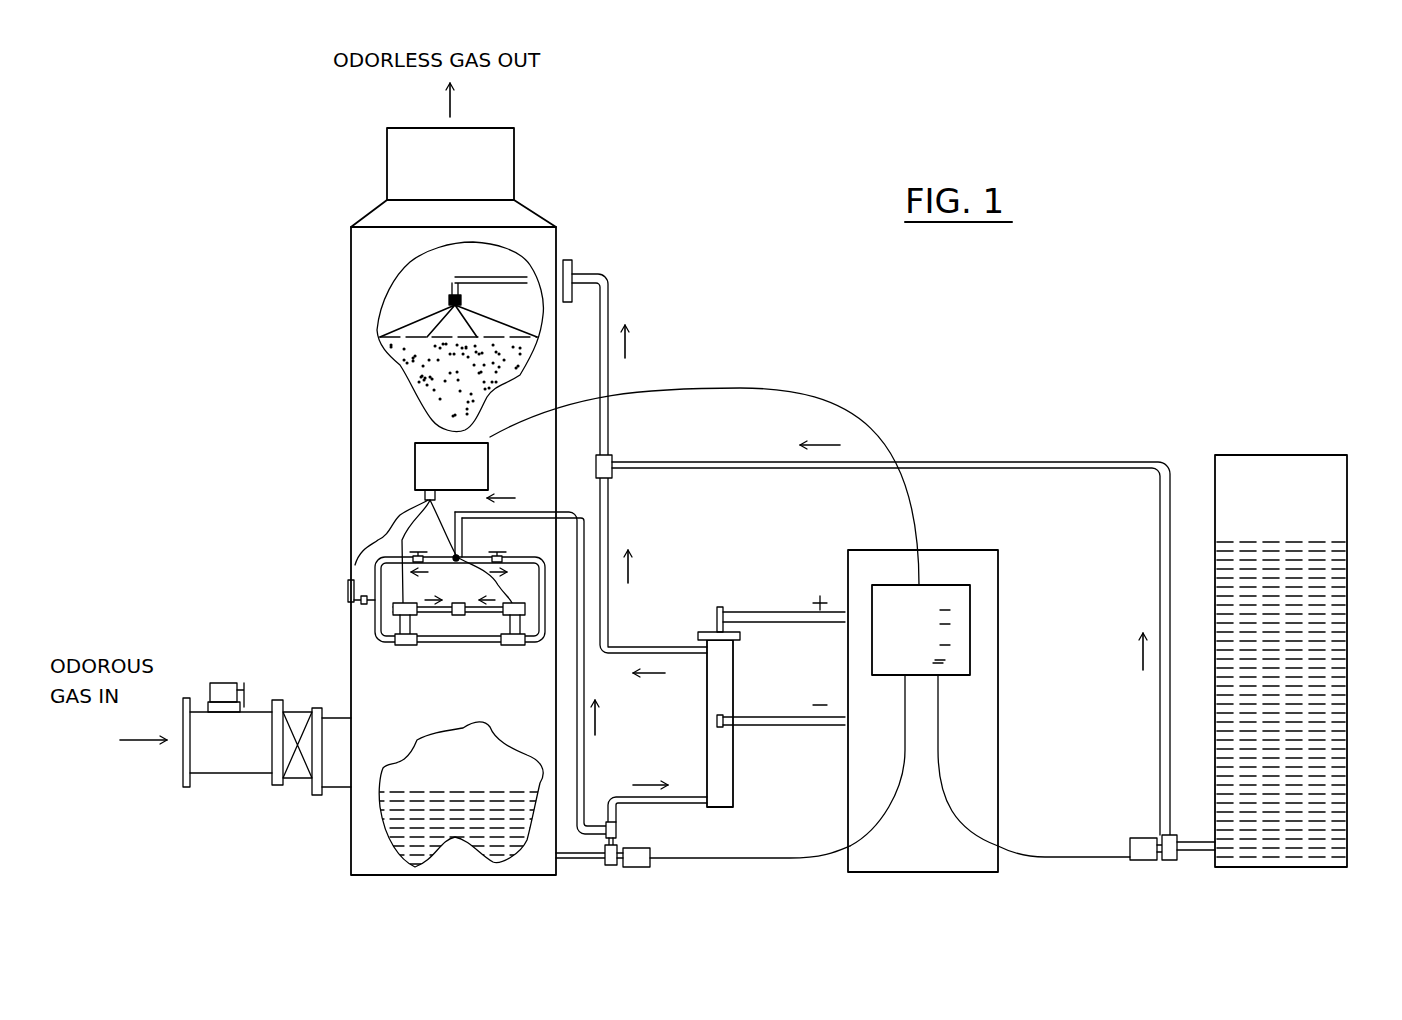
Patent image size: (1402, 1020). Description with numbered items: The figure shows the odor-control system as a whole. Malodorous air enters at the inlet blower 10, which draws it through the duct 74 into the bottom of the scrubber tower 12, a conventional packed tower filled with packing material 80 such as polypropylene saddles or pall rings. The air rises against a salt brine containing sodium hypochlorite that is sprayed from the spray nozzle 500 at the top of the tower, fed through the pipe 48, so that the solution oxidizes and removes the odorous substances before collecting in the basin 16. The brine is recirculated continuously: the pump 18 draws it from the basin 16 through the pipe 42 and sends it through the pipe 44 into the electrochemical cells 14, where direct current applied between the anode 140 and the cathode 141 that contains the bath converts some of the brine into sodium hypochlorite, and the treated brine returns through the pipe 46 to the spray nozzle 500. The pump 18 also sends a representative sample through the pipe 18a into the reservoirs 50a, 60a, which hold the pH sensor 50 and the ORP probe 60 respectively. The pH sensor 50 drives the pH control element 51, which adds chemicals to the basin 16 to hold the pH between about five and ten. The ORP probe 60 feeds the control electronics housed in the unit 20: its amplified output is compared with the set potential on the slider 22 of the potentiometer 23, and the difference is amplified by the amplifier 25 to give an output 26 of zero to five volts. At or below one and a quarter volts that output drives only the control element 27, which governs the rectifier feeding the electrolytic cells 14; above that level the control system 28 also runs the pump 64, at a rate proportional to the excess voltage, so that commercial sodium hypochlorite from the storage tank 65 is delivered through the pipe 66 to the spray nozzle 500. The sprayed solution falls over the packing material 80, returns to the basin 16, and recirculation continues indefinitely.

The blower 10 is at (237, 755).
The scrubber tower 12 is at (548, 240).
The electrochemical cells 14 is at (722, 807).
The basin 16 is at (442, 820).
The pump 18 is at (610, 866).
The pipe 18a is at (544, 666).
The power supply 20 is at (885, 550).
The slider 22 is at (942, 598).
The potentiometer 23 is at (945, 610).
The amplifier 25 is at (945, 624).
The output 26 is at (945, 645).
The control element 27 is at (940, 660).
The control system 28 is at (938, 663).
The pipe 42 is at (586, 858).
The pipe 44 is at (683, 803).
The pipe 46 is at (638, 650).
The pipe 48 is at (452, 285).
The pH sensor 50 is at (378, 590).
The reservoir 50a is at (405, 645).
The pH control element 51 is at (433, 463).
The ORP probe 60 is at (503, 612).
The reservoir 60a is at (517, 645).
The pump 64 is at (1170, 860).
The storage tank 65 is at (1287, 800).
The pipe 66 is at (660, 462).
The duct 74 is at (300, 778).
The packing material 80 is at (400, 365).
The anode 140 is at (728, 613).
The cathode 141 is at (728, 720).
The spray nozzle 500 is at (449, 300).